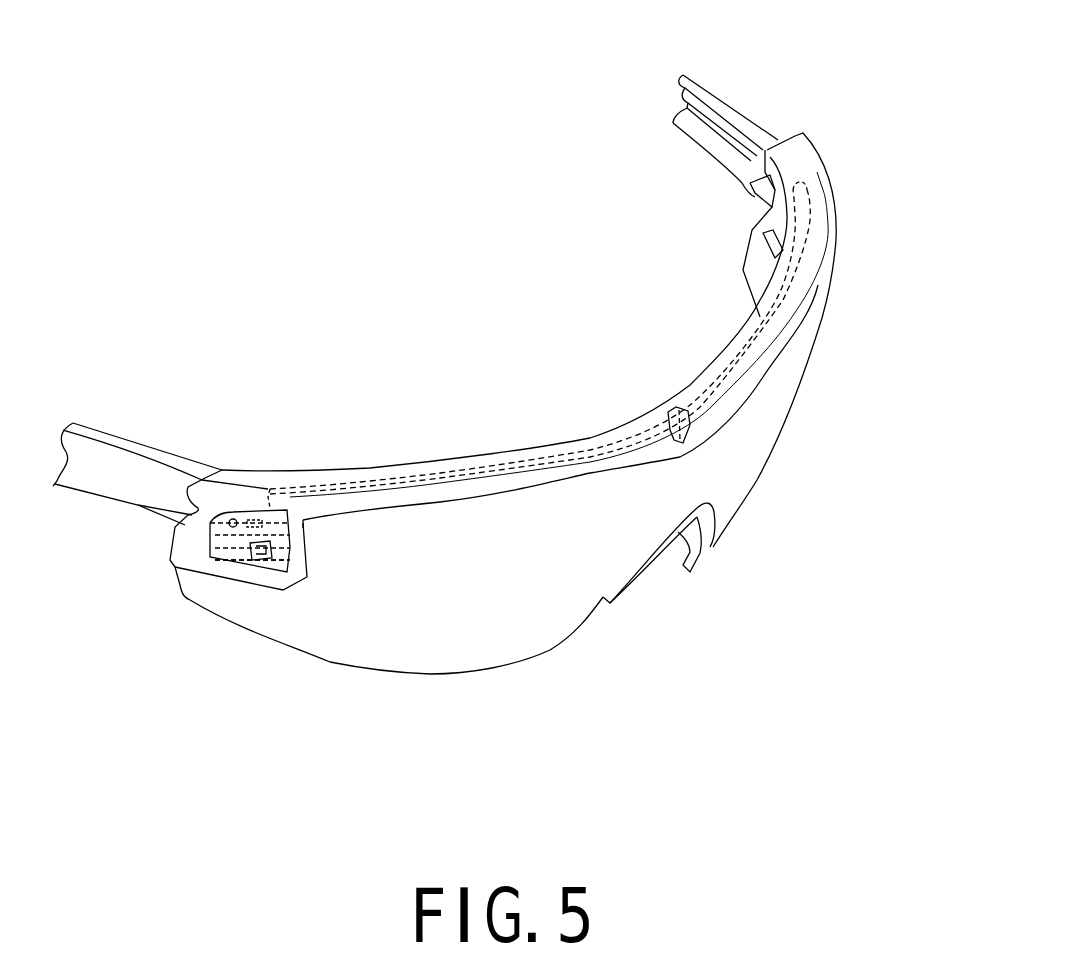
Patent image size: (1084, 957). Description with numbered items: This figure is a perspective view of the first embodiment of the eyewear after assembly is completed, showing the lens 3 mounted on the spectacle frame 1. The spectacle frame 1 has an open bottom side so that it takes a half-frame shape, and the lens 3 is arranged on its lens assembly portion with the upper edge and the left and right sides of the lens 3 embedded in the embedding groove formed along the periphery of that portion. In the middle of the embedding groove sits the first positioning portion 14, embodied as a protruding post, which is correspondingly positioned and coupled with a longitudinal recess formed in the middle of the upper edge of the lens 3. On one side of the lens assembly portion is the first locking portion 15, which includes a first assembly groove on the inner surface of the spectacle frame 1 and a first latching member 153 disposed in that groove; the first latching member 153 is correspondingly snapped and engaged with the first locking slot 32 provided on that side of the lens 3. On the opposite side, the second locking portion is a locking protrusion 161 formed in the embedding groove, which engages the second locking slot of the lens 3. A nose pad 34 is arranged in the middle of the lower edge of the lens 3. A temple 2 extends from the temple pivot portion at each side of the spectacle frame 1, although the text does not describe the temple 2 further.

The spectacle frame 1 is at (498, 370).
The temple 2 is at (703, 88).
The lens 3 is at (498, 537).
The first positioning portion 14 is at (672, 428).
The first locking portion 15 is at (170, 487).
The first locking slot 32 is at (265, 572).
The nose pad 34 is at (627, 594).
The first latching member 153 is at (215, 543).
The locking protrusion 161 is at (795, 255).